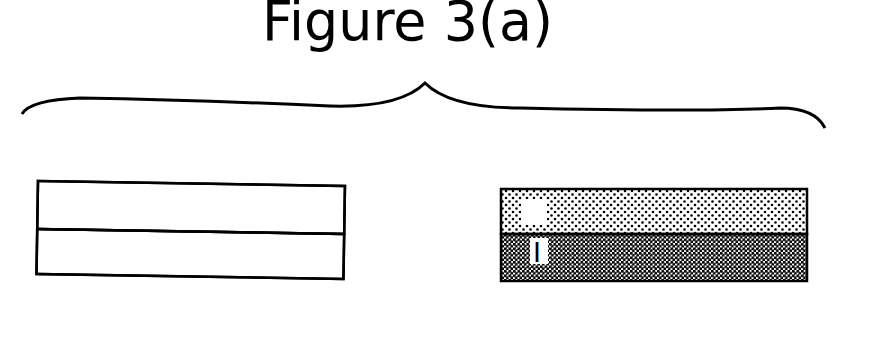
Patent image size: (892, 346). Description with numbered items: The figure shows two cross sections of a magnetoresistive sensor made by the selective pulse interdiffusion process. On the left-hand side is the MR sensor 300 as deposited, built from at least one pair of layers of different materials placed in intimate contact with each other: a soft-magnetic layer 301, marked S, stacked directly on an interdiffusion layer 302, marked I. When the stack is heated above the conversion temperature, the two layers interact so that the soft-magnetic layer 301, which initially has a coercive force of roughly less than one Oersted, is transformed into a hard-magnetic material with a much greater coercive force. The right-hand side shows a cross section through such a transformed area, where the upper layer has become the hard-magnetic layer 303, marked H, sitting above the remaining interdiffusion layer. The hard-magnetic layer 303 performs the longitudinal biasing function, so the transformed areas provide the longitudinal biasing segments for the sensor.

The MR sensor 300 is at (236, 180).
The soft-magnetic layer 301 is at (318, 222).
The interdiffusion layer 302 is at (318, 268).
The hard-magnetic layer 303 is at (782, 229).